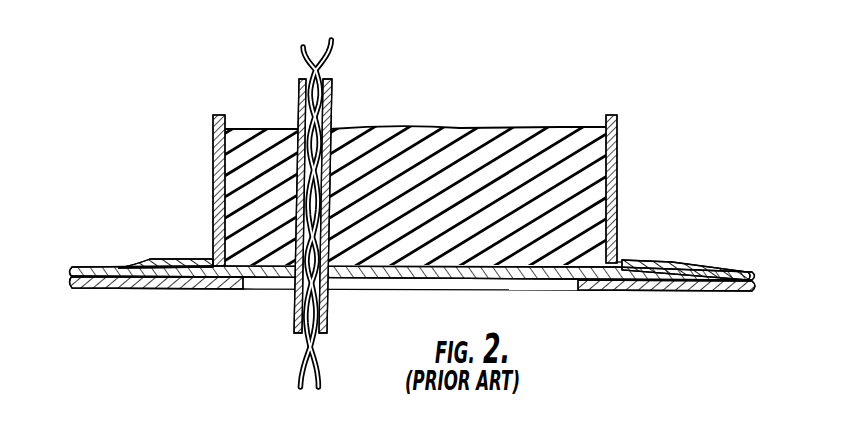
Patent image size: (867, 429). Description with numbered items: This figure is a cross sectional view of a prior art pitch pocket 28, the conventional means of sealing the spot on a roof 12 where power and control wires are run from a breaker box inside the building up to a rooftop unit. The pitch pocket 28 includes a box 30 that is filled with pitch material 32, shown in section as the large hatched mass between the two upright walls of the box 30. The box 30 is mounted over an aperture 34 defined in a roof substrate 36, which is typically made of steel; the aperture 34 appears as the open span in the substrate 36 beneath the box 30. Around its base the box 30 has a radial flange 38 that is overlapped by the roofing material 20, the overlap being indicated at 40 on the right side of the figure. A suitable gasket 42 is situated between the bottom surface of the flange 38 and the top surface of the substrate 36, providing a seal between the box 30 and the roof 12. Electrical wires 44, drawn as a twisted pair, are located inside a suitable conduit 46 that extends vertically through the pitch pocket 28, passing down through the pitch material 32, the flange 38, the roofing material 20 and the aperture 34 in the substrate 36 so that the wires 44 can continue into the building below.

The roof 12 is at (100, 262).
The roofing material 20 is at (413, 271).
The pitch pocket 28 is at (203, 167).
The box 30 is at (617, 153).
The pitch material 32 is at (501, 128).
The aperture 34 is at (560, 285).
The roof substrate 36 is at (688, 293).
The radial flange 38 is at (618, 258).
The overlap of roofing material 40 is at (658, 257).
The gasket 42 is at (153, 257).
The electrical wires 44 is at (298, 54).
The conduit 46 is at (332, 100).